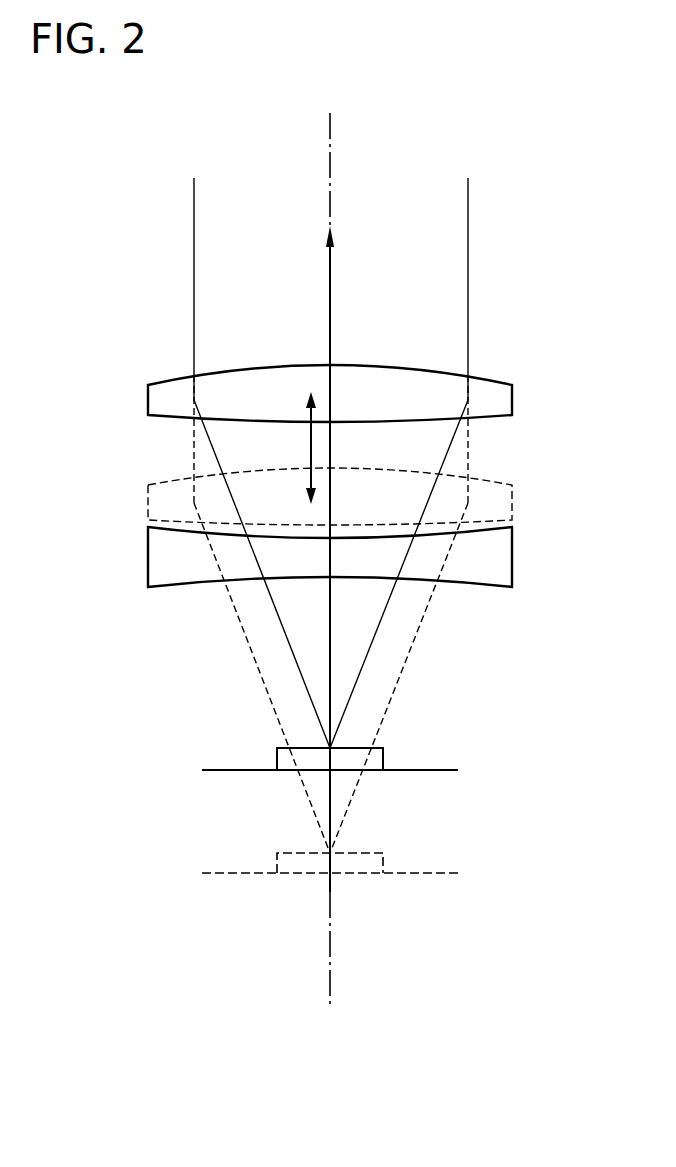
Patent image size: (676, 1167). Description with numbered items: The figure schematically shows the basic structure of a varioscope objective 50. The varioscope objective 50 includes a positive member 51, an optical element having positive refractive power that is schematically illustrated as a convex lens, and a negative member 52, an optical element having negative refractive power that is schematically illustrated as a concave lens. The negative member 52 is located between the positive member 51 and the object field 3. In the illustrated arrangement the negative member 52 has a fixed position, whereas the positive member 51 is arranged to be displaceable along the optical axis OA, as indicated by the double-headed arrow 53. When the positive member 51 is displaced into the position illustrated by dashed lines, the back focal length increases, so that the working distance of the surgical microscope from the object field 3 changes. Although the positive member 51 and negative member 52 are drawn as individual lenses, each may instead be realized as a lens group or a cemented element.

The optical axis OA is at (337, 543).
The varioscope objective 50 is at (324, 477).
The positive member 51 is at (512, 395).
The negative member 52 is at (512, 545).
The double-headed arrow 53 is at (309, 449).
The object field 3 is at (384, 757).